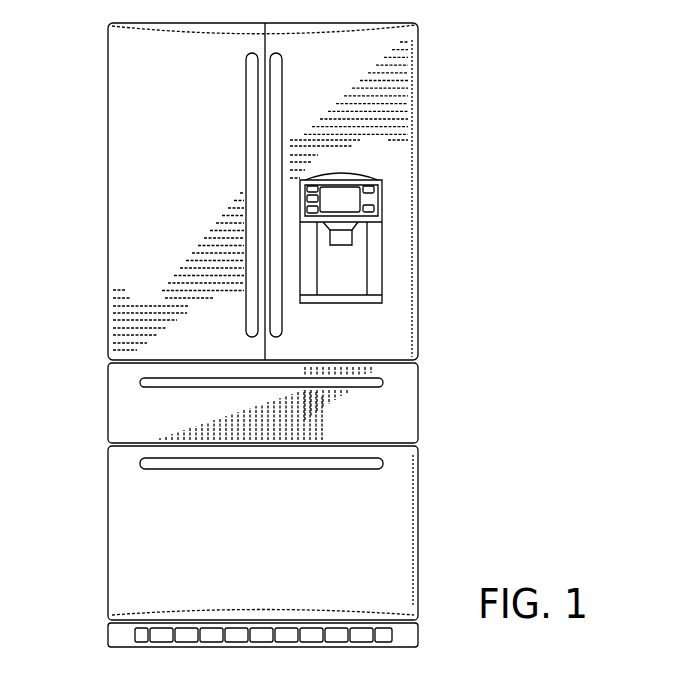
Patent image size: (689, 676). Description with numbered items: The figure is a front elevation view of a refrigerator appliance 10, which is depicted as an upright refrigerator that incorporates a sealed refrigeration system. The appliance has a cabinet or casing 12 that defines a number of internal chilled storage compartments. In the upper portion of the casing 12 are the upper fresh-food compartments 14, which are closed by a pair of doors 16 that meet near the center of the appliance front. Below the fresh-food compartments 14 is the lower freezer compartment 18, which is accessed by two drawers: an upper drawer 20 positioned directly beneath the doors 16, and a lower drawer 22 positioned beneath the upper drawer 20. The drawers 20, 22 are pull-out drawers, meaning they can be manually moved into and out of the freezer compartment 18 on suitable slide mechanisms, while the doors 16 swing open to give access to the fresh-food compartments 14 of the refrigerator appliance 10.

The refrigerator appliance 10 is at (478, 108).
The cabinet or casing 12 is at (420, 277).
The upper fresh-food compartments 14 is at (145, 167).
The doors 16 is at (170, 243).
The lower freezer compartment 18 is at (388, 409).
The upper drawer 20 is at (156, 421).
The lower drawer 22 is at (275, 549).